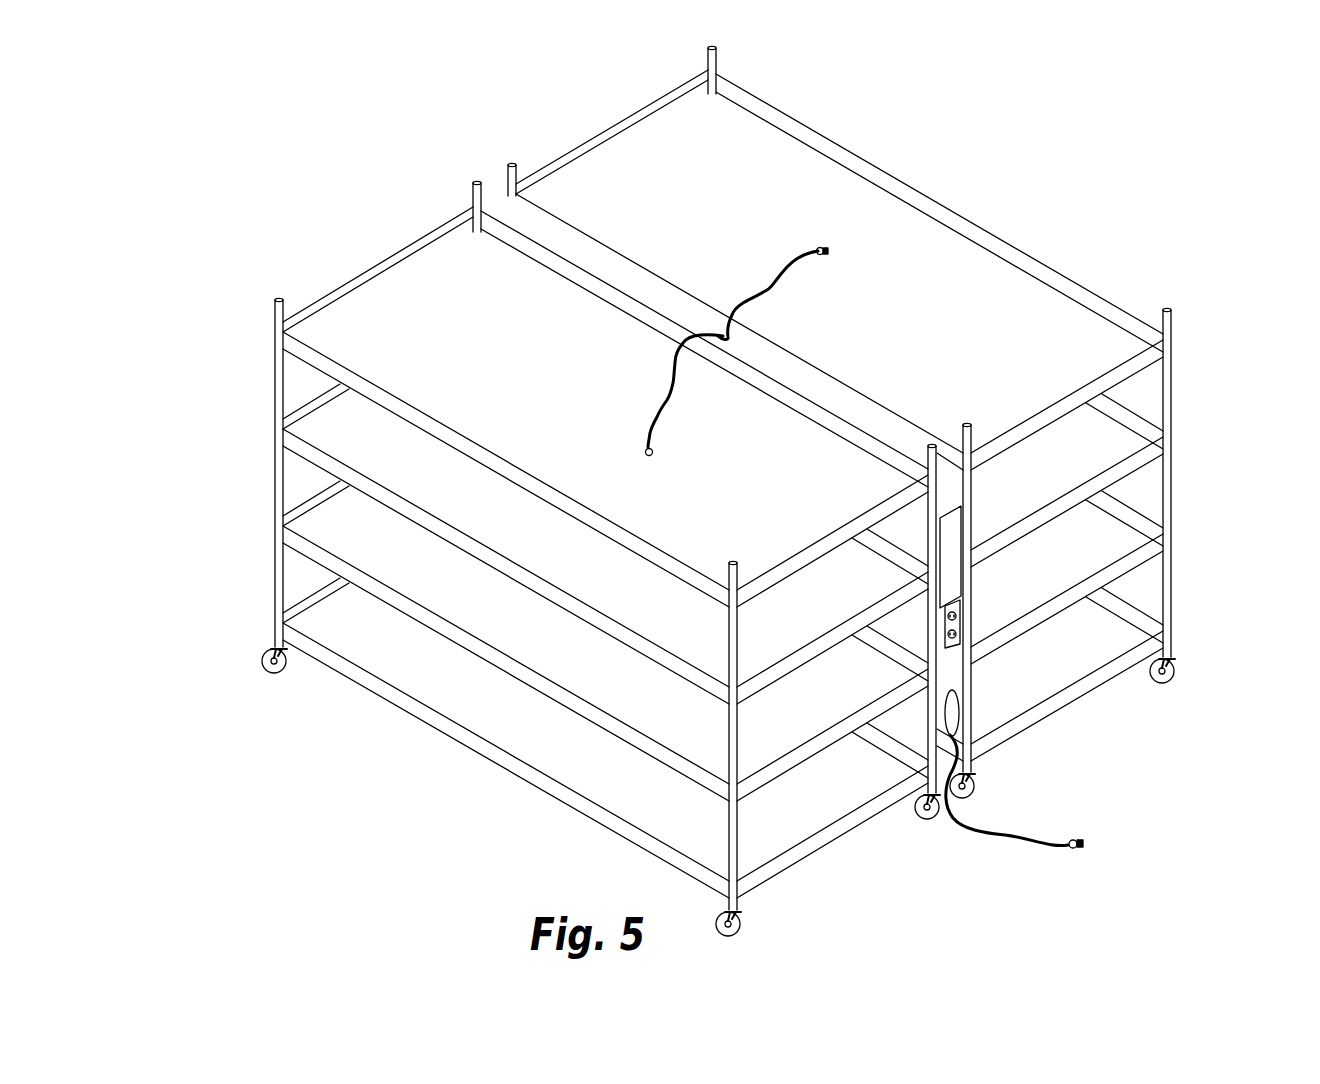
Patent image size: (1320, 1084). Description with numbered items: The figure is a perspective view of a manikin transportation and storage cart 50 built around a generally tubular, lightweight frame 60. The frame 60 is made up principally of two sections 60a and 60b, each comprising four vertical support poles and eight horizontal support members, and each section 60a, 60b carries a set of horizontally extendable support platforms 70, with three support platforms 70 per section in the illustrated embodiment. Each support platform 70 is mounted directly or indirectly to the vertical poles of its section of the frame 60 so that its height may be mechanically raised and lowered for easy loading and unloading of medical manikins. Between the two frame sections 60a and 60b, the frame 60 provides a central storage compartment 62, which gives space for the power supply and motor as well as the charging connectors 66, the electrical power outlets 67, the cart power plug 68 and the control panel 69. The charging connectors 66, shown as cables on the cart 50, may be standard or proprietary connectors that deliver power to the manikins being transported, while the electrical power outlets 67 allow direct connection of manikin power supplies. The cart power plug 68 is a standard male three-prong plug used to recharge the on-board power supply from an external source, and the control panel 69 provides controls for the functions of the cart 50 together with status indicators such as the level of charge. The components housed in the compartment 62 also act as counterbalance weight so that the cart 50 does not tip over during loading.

The manikin transportation and storage cart 50 is at (662, 491).
The frame 60 is at (256, 371).
The first frame section 60a is at (432, 766).
The second frame section 60b is at (1002, 178).
The central storage compartment 62 is at (987, 702).
The charging connectors 66 is at (787, 265).
The electrical power outlets 67 is at (940, 621).
The cart power plug 68 is at (998, 840).
The control panel 69 is at (953, 565).
The support platforms 70 is at (437, 528).